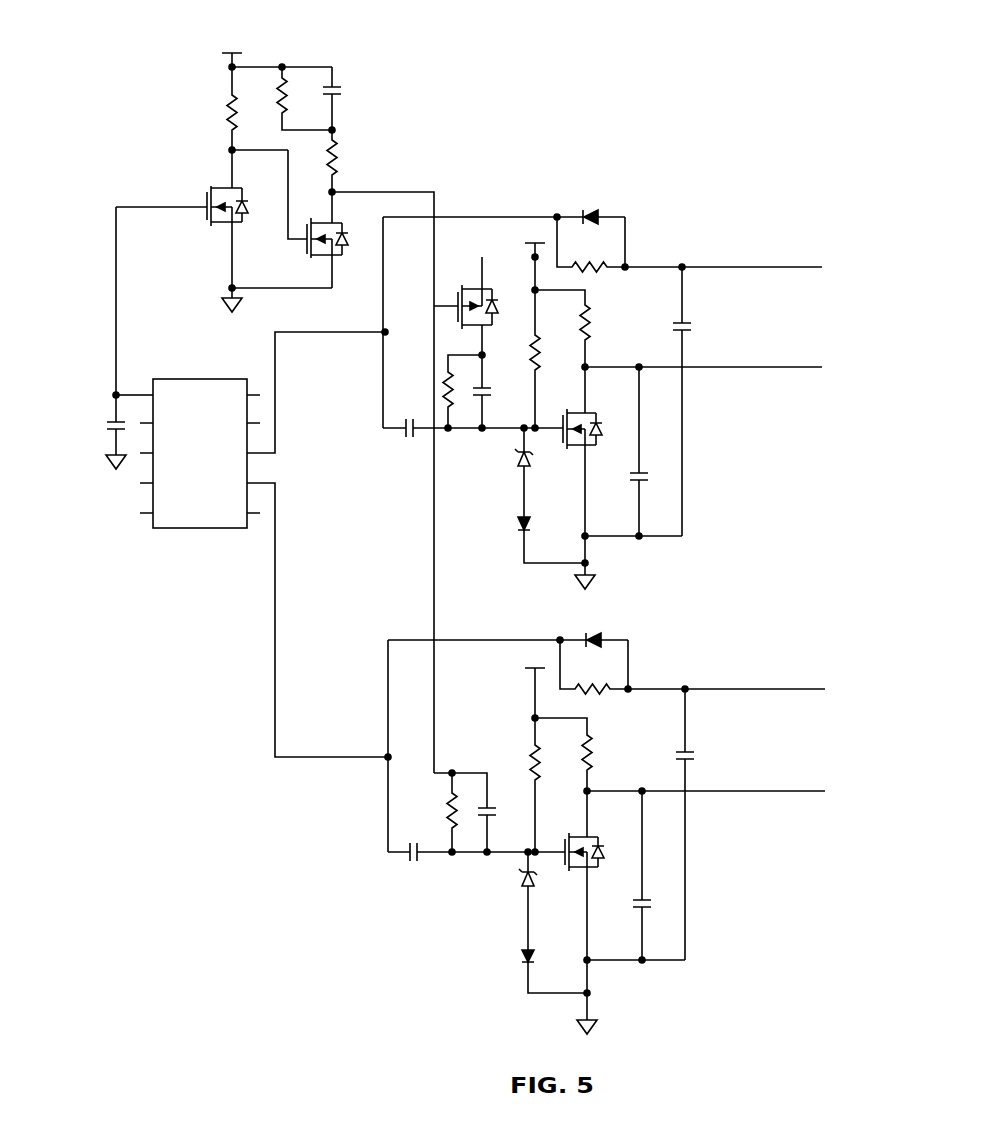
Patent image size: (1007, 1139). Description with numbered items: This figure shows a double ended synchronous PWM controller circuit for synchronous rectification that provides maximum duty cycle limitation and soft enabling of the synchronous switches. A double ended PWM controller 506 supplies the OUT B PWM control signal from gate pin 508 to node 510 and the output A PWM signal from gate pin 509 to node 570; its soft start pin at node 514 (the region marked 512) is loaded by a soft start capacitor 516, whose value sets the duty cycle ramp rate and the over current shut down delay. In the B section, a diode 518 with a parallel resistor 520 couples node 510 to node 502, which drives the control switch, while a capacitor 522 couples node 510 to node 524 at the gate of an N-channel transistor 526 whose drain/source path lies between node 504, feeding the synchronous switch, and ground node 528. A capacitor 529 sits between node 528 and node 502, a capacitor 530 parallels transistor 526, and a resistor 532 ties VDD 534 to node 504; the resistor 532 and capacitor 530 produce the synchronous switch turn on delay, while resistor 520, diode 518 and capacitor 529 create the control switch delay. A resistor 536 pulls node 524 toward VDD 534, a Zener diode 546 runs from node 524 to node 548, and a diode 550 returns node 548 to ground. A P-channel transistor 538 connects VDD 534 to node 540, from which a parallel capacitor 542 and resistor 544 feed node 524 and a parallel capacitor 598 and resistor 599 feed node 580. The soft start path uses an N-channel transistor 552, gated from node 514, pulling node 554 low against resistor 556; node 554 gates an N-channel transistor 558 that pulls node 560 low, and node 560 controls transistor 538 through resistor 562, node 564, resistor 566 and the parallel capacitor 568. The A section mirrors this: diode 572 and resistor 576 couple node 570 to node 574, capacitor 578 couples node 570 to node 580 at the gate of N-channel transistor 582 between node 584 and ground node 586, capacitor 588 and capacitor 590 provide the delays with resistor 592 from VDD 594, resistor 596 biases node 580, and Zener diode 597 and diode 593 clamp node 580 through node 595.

The node 502 is at (795, 268).
The node 504 is at (805, 368).
The double ended PWM controller 506 is at (185, 530).
The gate pin 508 is at (272, 455).
The gate pin 509 is at (277, 486).
The node 510 is at (384, 334).
The soft start pin input 512 is at (156, 378).
The node 514 is at (114, 394).
The soft start capacitor 516 is at (107, 426).
The diode 518 is at (597, 212).
The resistor 520 is at (598, 268).
The capacitor 522 is at (404, 430).
The node 524 is at (484, 432).
The N-channel transistor 526 is at (590, 410).
The ground node 528 is at (230, 288).
The capacitor 529 is at (695, 327).
The capacitor 530 is at (648, 482).
The resistor 532 is at (592, 328).
The VDD node 534 is at (232, 65).
The resistor 536 is at (531, 347).
The P-channel transistor 538 is at (455, 316).
The node 540 is at (481, 354).
The capacitor 542 is at (480, 442).
The resistor 544 is at (444, 390).
The Zener diode 546 is at (520, 466).
The node 548 is at (518, 520).
The diode 550 is at (520, 533).
The N-channel transistor 552 is at (215, 225).
The node 554 is at (230, 150).
The resistor 556 is at (227, 105).
The N-channel transistor 558 is at (316, 256).
The node 560 is at (336, 191).
The resistor 562 is at (338, 162).
The node 564 is at (335, 130).
The resistor 566 is at (278, 98).
The capacitor 568 is at (335, 68).
The node 570 is at (387, 759).
The diode 572 is at (605, 630).
The node 574 is at (687, 687).
The resistor 576 is at (603, 690).
The capacitor 578 is at (405, 856).
The node 580 is at (452, 858).
The N-channel transistor 582 is at (590, 838).
The node 584 is at (805, 792).
The ground node 586 is at (644, 962).
The capacitor 588 is at (700, 752).
The capacitor 590 is at (652, 903).
The resistor 592 is at (592, 762).
The diode 593 is at (522, 965).
The VDD node 594 is at (534, 717).
The node 595 is at (528, 934).
The resistor 596 is at (530, 762).
The Zener diode 597 is at (522, 878).
The capacitor 598 is at (488, 816).
The resistor 599 is at (449, 810).